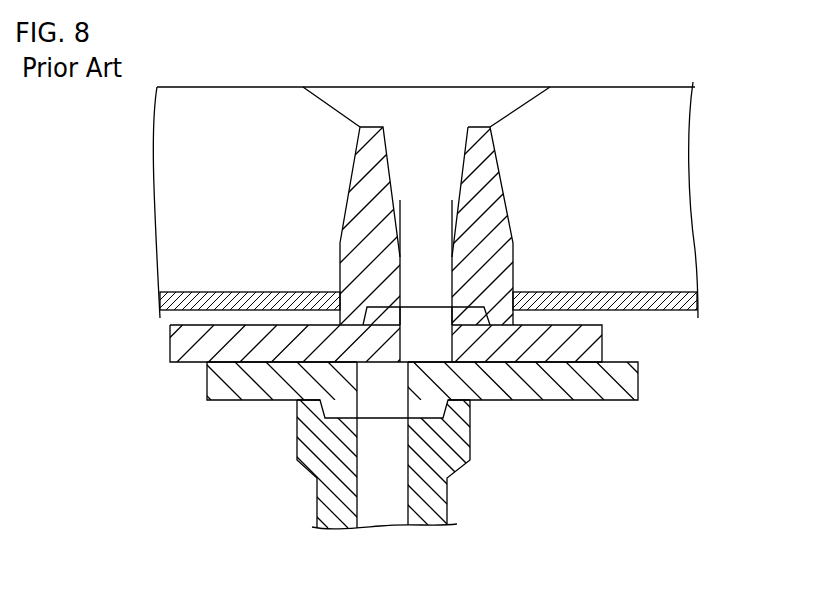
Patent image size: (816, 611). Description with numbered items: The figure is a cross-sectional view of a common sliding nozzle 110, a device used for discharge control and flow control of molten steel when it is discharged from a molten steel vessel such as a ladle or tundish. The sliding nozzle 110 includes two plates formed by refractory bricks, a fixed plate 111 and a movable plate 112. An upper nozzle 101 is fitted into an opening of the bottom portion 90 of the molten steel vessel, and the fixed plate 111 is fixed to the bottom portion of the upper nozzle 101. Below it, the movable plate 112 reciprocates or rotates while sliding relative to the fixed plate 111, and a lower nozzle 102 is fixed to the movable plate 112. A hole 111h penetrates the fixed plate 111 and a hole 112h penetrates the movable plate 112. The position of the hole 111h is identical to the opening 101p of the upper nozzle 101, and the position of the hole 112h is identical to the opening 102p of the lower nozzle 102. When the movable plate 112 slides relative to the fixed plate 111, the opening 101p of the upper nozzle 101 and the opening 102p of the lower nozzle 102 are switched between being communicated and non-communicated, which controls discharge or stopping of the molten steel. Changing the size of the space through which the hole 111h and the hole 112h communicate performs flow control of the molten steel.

The bottom portion 90 is at (682, 201).
The upper nozzle 101 is at (477, 167).
The opening of the upper nozzle 101p is at (447, 244).
The sliding nozzle 110 is at (437, 379).
The fixed plate 111 is at (602, 345).
The hole of the fixed plate 111h is at (447, 338).
The movable plate 112 is at (638, 382).
The hole of the movable plate 112h is at (400, 373).
The lower nozzle 102 is at (470, 442).
The opening of the lower nozzle 102p is at (362, 528).